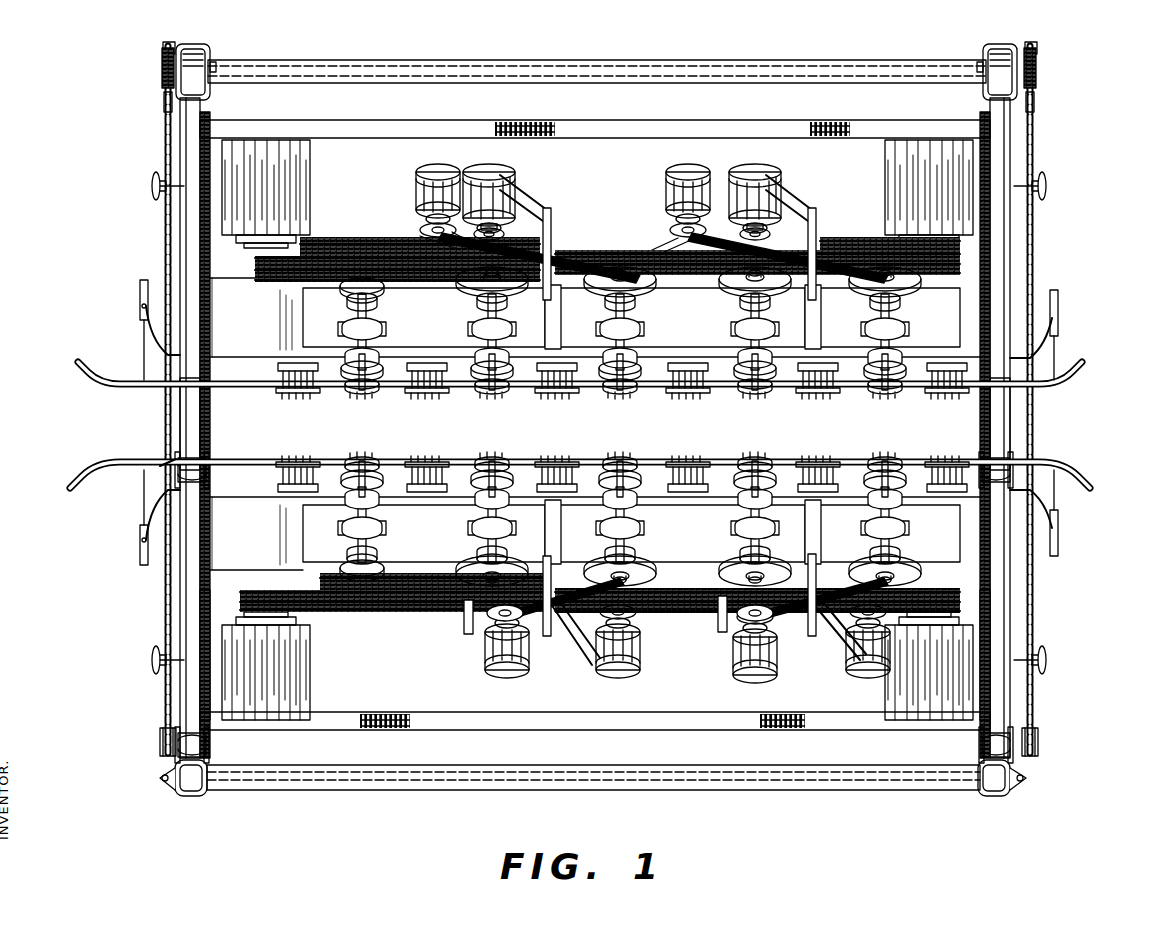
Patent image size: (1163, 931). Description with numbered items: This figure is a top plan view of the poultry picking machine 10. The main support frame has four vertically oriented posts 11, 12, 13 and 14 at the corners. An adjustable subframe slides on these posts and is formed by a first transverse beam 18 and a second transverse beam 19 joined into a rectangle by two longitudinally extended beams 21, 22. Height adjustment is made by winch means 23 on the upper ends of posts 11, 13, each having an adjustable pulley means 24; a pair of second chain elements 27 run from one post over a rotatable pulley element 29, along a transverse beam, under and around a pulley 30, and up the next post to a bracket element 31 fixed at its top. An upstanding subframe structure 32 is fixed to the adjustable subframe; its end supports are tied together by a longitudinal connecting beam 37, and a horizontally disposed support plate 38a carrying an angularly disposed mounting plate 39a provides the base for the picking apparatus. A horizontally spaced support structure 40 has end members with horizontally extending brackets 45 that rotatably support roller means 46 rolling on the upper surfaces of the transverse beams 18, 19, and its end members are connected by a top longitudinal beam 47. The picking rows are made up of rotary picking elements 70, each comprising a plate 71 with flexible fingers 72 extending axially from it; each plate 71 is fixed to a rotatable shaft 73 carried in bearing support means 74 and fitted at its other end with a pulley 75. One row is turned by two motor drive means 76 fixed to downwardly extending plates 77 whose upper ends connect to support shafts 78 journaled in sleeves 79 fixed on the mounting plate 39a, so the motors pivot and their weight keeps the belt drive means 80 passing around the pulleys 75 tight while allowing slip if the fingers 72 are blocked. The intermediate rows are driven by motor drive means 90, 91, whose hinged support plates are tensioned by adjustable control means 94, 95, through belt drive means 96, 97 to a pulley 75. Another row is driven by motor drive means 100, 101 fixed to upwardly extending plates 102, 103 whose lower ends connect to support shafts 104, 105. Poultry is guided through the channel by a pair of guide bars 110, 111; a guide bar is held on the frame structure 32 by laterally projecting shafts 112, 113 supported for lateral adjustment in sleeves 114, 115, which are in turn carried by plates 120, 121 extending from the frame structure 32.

The fruit washing apparatus 10 is at (178, 800).
The vertically oriented post means 11 is at (205, 66).
The vertically oriented post means 12 is at (195, 780).
The vertically oriented post means 13 is at (1000, 62).
The vertically oriented post means 14 is at (990, 782).
The first transverse beam 18 is at (186, 428).
The second transverse beam 19 is at (1010, 446).
The longitudinally extended beam 21 is at (545, 62).
The longitudinally extended beam 22 is at (740, 785).
The winch means 23 is at (165, 47).
The operable pulley means 24 is at (162, 72).
The second chain element 27 is at (168, 590).
The rotatable pulley element 29 is at (164, 100).
The pulley 30 is at (160, 738).
The bracket element 31 is at (168, 788).
The upstanding subframe structure 32 is at (192, 202).
The longitudinal connecting beam 37 is at (425, 128).
The horizontally disposed support plate 38a is at (256, 324).
The angularly disposed mounting plate 39a is at (710, 324).
The horizontally spaced support structure 40 is at (200, 602).
The horizontally extending bracket 45 is at (160, 462).
The roller means 46 is at (190, 468).
The top longitudinal beam 47 is at (625, 722).
The rotary picking element 70 is at (348, 325).
The plate 71 is at (372, 396).
The flexible fingers 72 is at (302, 452).
The rotatable shaft 73 is at (370, 330).
The bearing support means 74 is at (358, 340).
The pulley 75 is at (526, 288).
The motor drive means 76 is at (500, 172).
The downwardly extending plate 77 is at (518, 200).
The support shaft 78 is at (552, 216).
The sleeve 79 is at (554, 336).
The belt drive means 80 is at (560, 252).
The motor drive means 90 is at (296, 190).
The motor drive means 91 is at (890, 170).
The adjustable control means 94 is at (150, 184).
The adjustable control means 95 is at (1046, 180).
The belt drive means 96 is at (390, 244).
The belt drive means 97 is at (838, 242).
The motor drive means 100 is at (428, 176).
The motor drive means 101 is at (676, 178).
The upwardly extending plate 102 is at (486, 632).
The upwardly extending plate 103 is at (740, 630).
The support shaft 104 is at (466, 620).
The support shaft 105 is at (718, 618).
The guide bar 110 is at (96, 378).
The guide bar 111 is at (90, 468).
The laterally projecting shaft 112 is at (142, 348).
The laterally projecting shaft 113 is at (1055, 352).
The sleeve 114 is at (140, 285).
The sleeve 115 is at (1058, 298).
The plate 120 is at (160, 356).
The plate 121 is at (1040, 360).